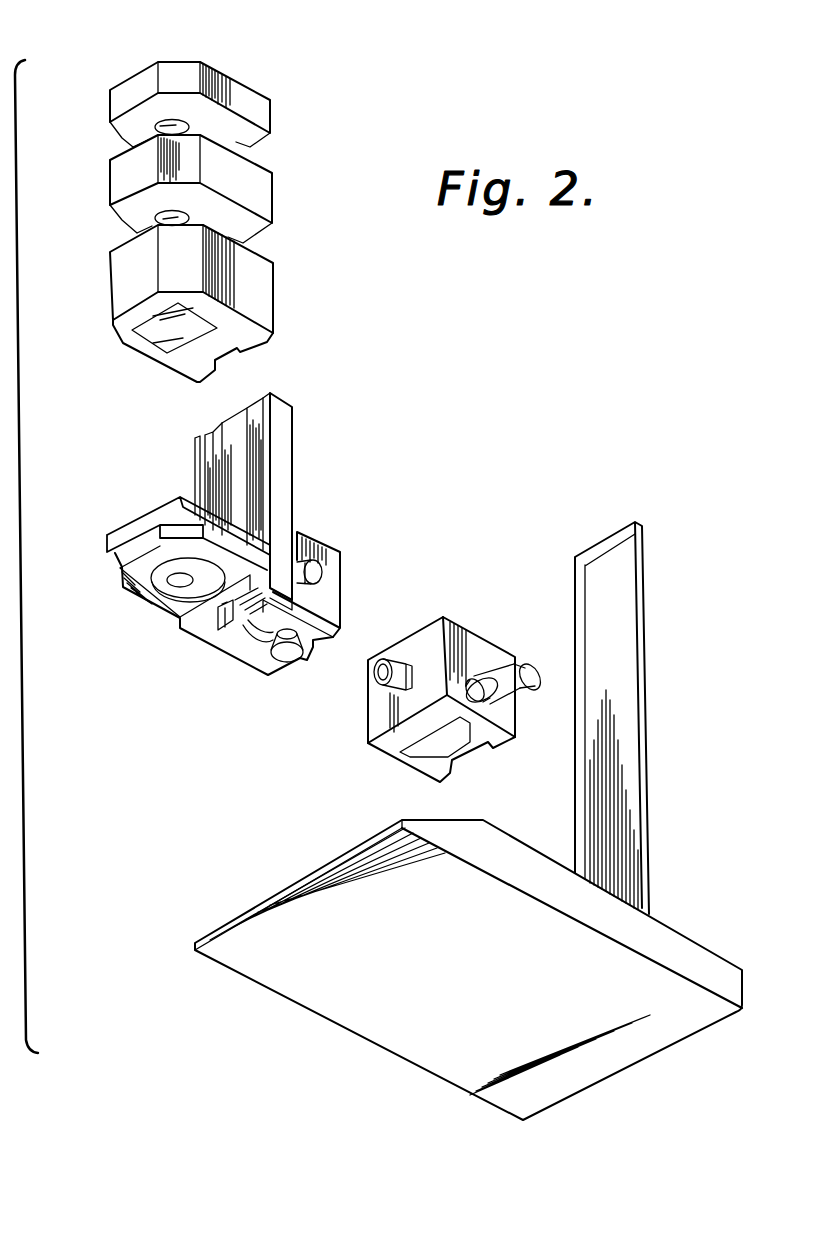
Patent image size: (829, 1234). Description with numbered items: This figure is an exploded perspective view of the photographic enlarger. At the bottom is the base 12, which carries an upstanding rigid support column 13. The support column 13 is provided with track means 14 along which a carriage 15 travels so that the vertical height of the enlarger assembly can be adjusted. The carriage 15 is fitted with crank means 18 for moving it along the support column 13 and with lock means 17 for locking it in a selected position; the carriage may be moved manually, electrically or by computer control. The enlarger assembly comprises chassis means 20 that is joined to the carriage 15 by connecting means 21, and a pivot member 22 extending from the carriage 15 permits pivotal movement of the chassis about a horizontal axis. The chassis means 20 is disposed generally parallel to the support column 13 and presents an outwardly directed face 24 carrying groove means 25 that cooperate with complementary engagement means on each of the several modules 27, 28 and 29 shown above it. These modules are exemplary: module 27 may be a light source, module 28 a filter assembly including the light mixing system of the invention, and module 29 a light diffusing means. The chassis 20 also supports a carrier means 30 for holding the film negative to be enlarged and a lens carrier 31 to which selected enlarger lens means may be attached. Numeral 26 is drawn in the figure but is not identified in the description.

The base 12 is at (427, 1000).
The support column 13 is at (643, 566).
The track means 14 is at (645, 738).
The carriage 15 is at (517, 727).
The lock means 17 is at (468, 680).
The crank means 18 is at (532, 668).
The chassis means 20 is at (282, 472).
The connecting means 21 is at (333, 560).
The pivot member 22 is at (393, 693).
The outwardly directed face 24 is at (234, 418).
The groove means 25 is at (200, 458).
The lower block 26 is at (272, 343).
The module 27 is at (229, 93).
The module 28 is at (257, 187).
The module 29 is at (123, 273).
The carrier means 30 is at (138, 533).
The lens carrier 31 is at (138, 592).